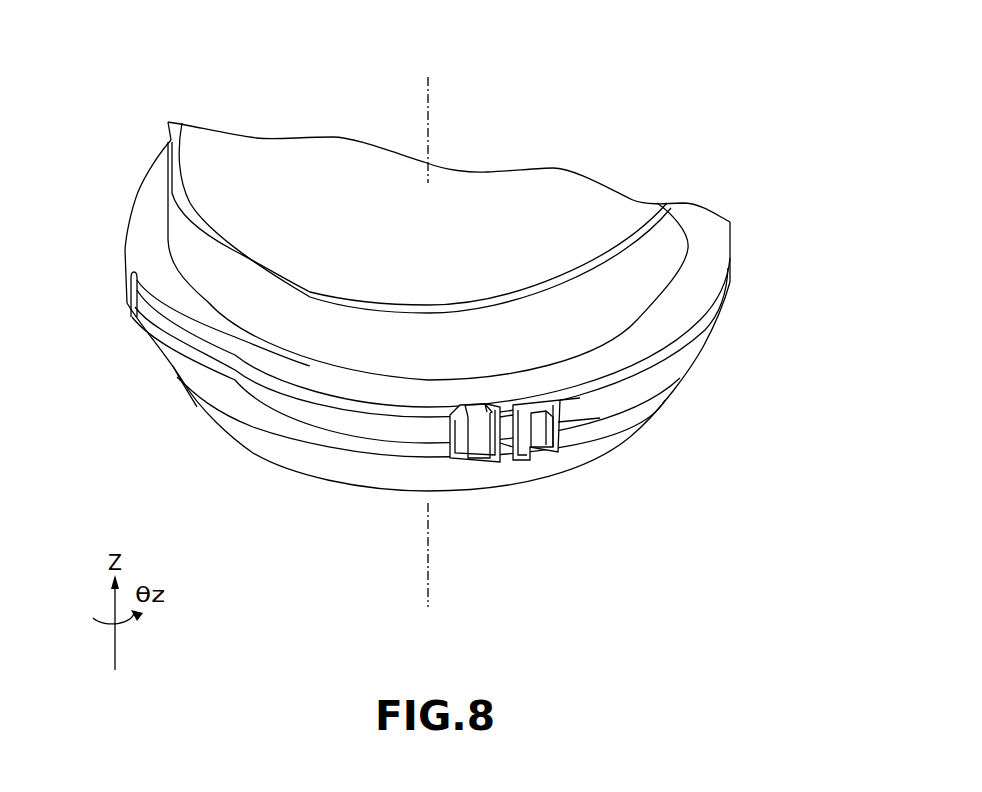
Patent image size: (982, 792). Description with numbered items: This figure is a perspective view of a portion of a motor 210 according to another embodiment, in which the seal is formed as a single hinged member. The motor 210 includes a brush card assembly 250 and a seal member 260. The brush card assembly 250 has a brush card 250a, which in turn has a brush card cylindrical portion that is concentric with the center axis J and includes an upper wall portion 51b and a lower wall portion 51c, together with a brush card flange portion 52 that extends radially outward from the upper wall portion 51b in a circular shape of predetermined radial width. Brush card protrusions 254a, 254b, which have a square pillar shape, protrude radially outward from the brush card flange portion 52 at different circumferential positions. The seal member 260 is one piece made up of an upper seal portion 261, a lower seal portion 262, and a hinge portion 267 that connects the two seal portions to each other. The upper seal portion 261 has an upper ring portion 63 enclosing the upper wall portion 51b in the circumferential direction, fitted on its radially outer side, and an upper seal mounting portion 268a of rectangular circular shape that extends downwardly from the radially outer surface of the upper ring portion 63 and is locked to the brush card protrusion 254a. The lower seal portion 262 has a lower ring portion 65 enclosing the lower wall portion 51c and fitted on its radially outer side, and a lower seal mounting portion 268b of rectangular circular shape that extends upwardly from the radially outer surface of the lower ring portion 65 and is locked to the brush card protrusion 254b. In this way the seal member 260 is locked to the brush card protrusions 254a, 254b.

The motor 210 is at (622, 73).
The seal member 260 is at (327, 83).
The upper seal portion 261 is at (212, 298).
The lower seal portion 262 is at (259, 402).
The upper ring portion 63 is at (305, 377).
The upper wall portion 51b is at (532, 317).
The lower wall portion 51c is at (197, 404).
The hinge portion 267 is at (126, 278).
The brush card 250a is at (642, 195).
The lower ring portion 65 is at (223, 407).
The brush card flange portion 52 is at (373, 430).
The brush card assembly 250 is at (304, 447).
The brush card protrusion 254a is at (484, 447).
The brush card protrusion 254b is at (539, 443).
The upper seal mounting portion 268a is at (468, 430).
The lower seal mounting portion 268b is at (562, 412).
The center axis J is at (432, 98).